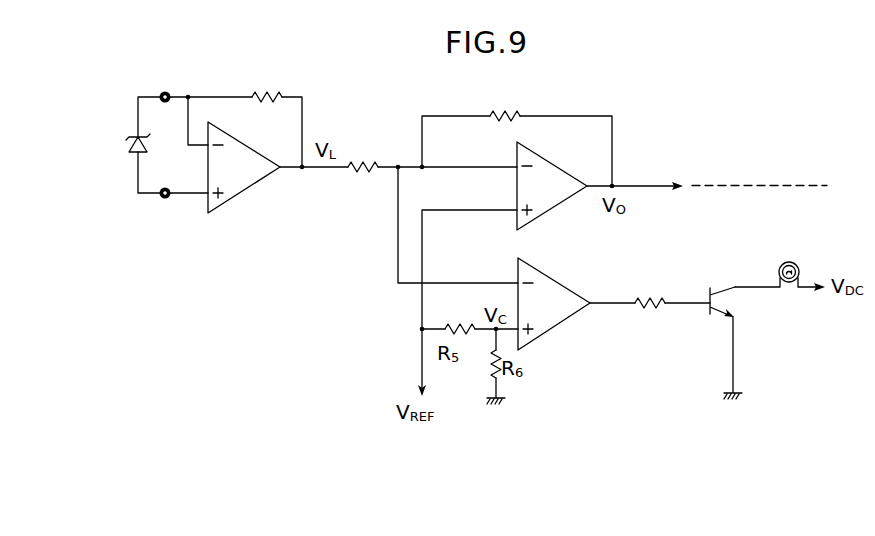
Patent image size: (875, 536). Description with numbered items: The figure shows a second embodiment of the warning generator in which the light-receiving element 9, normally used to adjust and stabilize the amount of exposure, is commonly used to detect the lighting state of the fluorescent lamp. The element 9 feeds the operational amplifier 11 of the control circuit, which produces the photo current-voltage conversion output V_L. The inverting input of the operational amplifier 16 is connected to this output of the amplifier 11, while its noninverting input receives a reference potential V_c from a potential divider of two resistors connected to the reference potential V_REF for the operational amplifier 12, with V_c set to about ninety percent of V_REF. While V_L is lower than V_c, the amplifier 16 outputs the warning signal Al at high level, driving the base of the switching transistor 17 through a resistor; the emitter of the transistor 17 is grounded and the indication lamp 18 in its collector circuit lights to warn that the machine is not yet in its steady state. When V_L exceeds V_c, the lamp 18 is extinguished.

The light-receiving element 9 is at (129, 138).
The operational amplifier 11 is at (253, 153).
The operational amplifier 12 is at (556, 170).
The operational amplifier 16 is at (552, 334).
The switching transistor 17 is at (712, 314).
The indication lamp 18 is at (800, 264).